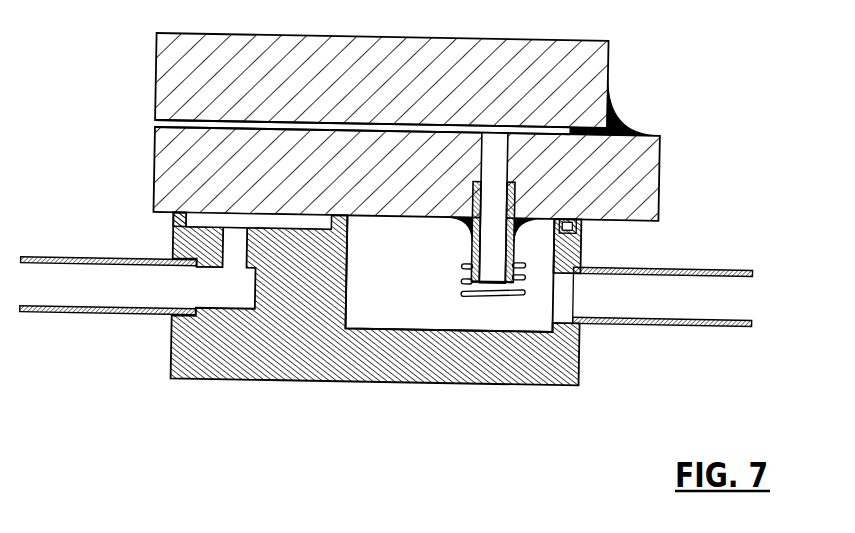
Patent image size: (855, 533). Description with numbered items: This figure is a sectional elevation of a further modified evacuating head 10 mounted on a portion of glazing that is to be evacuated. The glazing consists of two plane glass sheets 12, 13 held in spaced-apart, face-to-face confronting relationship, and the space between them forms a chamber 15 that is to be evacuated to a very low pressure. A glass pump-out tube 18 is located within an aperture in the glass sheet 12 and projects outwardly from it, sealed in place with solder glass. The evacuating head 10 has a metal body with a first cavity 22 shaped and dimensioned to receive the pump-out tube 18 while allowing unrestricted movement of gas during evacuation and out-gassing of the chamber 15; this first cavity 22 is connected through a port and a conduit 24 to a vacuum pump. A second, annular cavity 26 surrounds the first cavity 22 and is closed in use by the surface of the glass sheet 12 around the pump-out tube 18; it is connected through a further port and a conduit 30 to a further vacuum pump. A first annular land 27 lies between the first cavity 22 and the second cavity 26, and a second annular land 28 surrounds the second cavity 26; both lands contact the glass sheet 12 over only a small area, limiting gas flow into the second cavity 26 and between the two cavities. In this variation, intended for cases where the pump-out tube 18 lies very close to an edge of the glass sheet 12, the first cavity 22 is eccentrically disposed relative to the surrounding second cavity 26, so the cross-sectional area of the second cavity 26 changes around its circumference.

The evacuating head 10 is at (325, 398).
The glass sheet 12 is at (671, 180).
The glass sheet 13 is at (628, 80).
The chamber 15 is at (153, 121).
The pump-out tube 18 is at (475, 252).
The first cavity 22 is at (427, 312).
The conduit 24 is at (690, 325).
The second cavity 26 is at (265, 219).
The first annular land 27 is at (556, 214).
The second annular land 28 is at (177, 213).
The conduit 30 is at (63, 313).